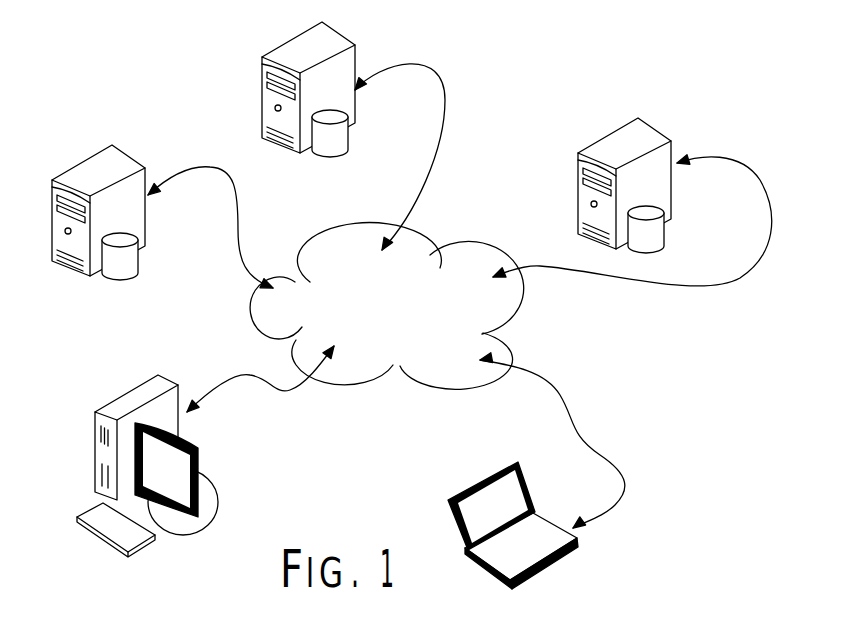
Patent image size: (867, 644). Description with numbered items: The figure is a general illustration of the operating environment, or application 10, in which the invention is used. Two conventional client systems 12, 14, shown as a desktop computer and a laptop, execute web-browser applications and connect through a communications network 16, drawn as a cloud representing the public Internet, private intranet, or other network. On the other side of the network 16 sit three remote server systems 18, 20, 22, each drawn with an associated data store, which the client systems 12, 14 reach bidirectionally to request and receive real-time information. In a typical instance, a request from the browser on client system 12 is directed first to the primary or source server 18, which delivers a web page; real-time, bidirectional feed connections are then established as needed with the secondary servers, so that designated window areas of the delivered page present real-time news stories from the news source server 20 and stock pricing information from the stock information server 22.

The application 10 is at (650, 360).
The client system 12 is at (198, 467).
The client system 14 is at (483, 475).
The communications network 16 is at (405, 344).
The source server 18 is at (90, 153).
The news source server 20 is at (263, 103).
The stock information server 22 is at (598, 143).